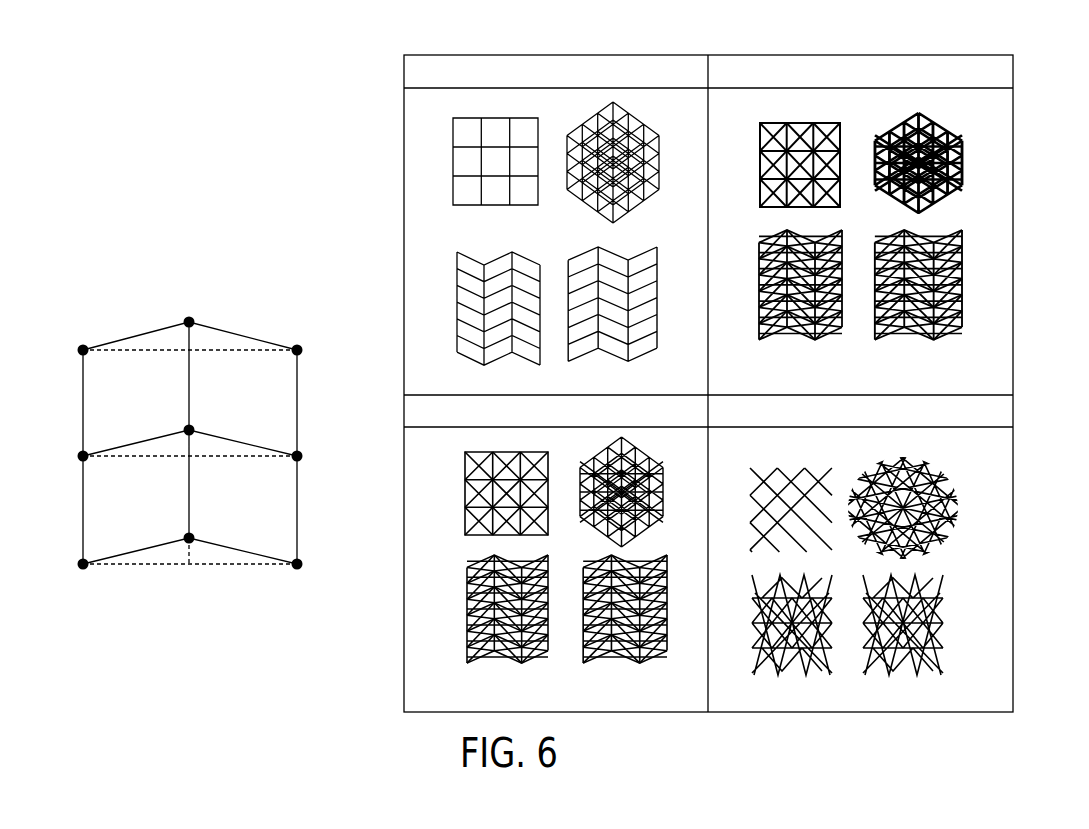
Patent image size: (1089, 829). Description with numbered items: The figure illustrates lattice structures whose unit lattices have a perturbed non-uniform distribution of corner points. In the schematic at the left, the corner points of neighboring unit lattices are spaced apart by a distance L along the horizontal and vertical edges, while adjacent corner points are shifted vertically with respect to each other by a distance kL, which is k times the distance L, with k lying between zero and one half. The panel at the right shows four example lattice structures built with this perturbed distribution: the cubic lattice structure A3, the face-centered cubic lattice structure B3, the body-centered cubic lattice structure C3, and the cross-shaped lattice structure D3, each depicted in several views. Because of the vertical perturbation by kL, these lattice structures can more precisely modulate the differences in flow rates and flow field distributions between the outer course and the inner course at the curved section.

The distance L is at (176, 474).
The distance kL is at (196, 543).
The cubic lattice structure A3 is at (556, 215).
The face-centered cubic lattice structure B3 is at (860, 202).
The body-centered cubic lattice structure C3 is at (566, 534).
The cross-shaped lattice structure D3 is at (865, 540).